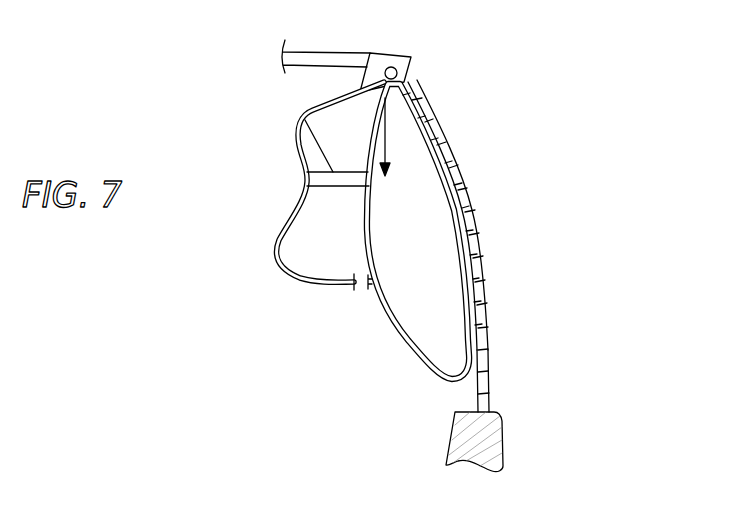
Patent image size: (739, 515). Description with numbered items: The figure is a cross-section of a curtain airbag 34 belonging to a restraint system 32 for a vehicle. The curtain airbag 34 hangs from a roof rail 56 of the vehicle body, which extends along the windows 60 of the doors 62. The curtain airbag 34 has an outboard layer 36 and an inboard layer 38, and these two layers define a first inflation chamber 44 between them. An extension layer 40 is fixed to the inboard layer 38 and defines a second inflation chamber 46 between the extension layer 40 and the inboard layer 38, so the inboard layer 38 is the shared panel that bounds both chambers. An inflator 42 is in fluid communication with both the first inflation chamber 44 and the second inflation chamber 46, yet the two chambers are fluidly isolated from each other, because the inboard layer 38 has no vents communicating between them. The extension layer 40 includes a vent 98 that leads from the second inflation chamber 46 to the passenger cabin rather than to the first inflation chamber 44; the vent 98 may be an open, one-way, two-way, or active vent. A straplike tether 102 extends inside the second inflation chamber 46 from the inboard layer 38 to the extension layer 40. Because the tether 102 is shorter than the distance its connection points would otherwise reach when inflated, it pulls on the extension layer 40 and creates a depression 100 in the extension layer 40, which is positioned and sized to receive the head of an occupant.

The restraint system 32 is at (353, 388).
The curtain airbag 34 is at (428, 369).
The outboard layer 36 is at (470, 270).
The inboard layer 38 is at (398, 328).
The extension layer 40 is at (280, 263).
The inflator 42 is at (397, 61).
The first inflation chamber 44 is at (427, 200).
The second inflation chamber 46 is at (315, 220).
The roof rail 56 is at (410, 70).
The window 60 is at (493, 333).
The door 62 is at (500, 428).
The vent 98 is at (350, 283).
The depression 100 is at (305, 167).
The tether 102 is at (303, 122).